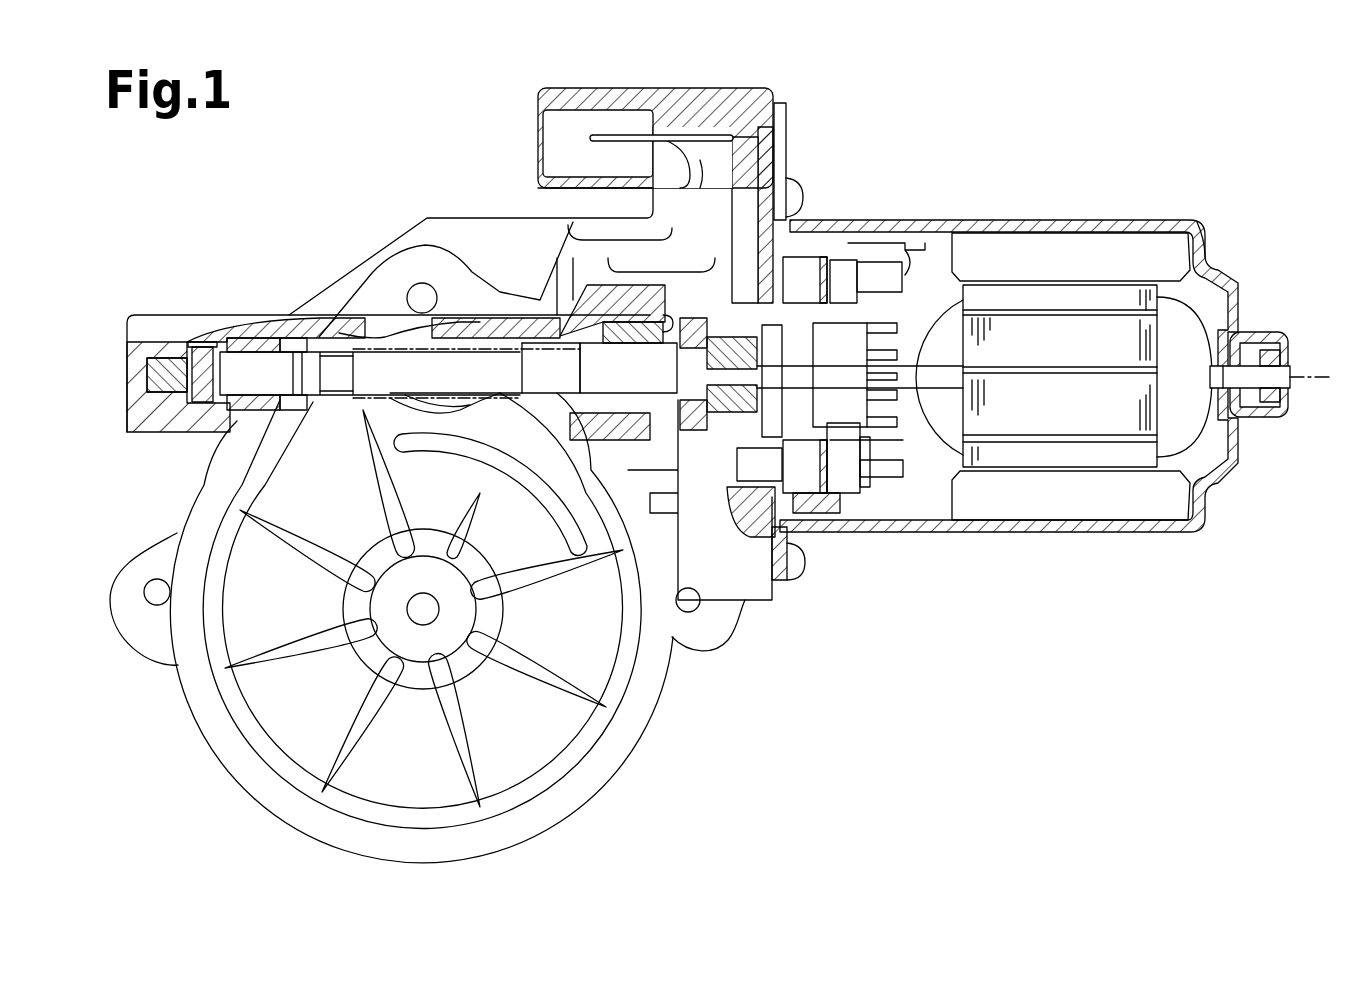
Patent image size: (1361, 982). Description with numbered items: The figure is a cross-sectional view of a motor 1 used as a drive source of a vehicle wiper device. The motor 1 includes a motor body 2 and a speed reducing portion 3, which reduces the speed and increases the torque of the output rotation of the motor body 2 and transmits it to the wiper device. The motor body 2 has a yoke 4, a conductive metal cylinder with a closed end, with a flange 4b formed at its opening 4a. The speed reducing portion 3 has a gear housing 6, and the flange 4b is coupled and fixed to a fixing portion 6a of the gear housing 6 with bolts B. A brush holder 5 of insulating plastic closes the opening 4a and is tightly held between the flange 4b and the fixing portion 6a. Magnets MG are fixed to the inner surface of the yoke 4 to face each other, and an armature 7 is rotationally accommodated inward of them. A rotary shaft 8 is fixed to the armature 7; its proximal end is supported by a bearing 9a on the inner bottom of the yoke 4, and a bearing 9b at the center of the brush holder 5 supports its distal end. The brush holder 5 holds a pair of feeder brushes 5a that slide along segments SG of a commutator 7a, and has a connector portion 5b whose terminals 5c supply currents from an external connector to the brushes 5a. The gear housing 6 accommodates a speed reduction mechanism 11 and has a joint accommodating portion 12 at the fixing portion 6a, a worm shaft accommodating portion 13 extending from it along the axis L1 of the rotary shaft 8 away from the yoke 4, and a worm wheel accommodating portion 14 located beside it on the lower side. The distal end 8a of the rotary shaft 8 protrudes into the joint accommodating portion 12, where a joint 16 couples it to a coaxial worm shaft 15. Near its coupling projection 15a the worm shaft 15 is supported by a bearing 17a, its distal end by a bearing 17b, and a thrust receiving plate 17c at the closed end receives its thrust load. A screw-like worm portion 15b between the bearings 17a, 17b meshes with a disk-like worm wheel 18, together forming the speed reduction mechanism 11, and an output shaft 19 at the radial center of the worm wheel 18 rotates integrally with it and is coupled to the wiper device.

The motor 1 is at (908, 607).
The motor body 2 is at (972, 217).
The speed reducing portion 3 is at (608, 795).
The yoke 4 is at (1063, 220).
The opening 4a is at (845, 232).
The flange 4b is at (786, 120).
The brush holder 5 is at (812, 240).
The feeder brushes 5a is at (893, 248).
The connector portion 5b is at (684, 92).
The terminals 5c is at (600, 135).
The gear housing 6 is at (452, 217).
The fixing portion 6a is at (722, 600).
The armature 7 is at (1195, 425).
The commutator 7a is at (900, 378).
The rotary shaft 8 is at (1238, 330).
The distal end 8a is at (755, 415).
The bearing 9a is at (1240, 335).
The bearing 9b is at (755, 345).
The speed reduction mechanism 11 is at (500, 323).
The joint accommodating portion 12 is at (628, 367).
The worm shaft accommodating portion 13 is at (320, 340).
The worm wheel accommodating portion 14 is at (270, 730).
The worm shaft 15 is at (390, 365).
The coupling projection 15a is at (690, 318).
The worm portion 15b is at (470, 340).
The joint 16 is at (850, 425).
The bearing 17a is at (588, 360).
The bearing 17b is at (252, 343).
The thrust receiving plate 17c is at (200, 345).
The worm wheel 18 is at (430, 385).
The output shaft 19 is at (460, 612).
The magnets MG is at (1142, 245).
The segments SG is at (860, 400).
The bolts B is at (795, 560).
The axis L1 is at (1318, 398).